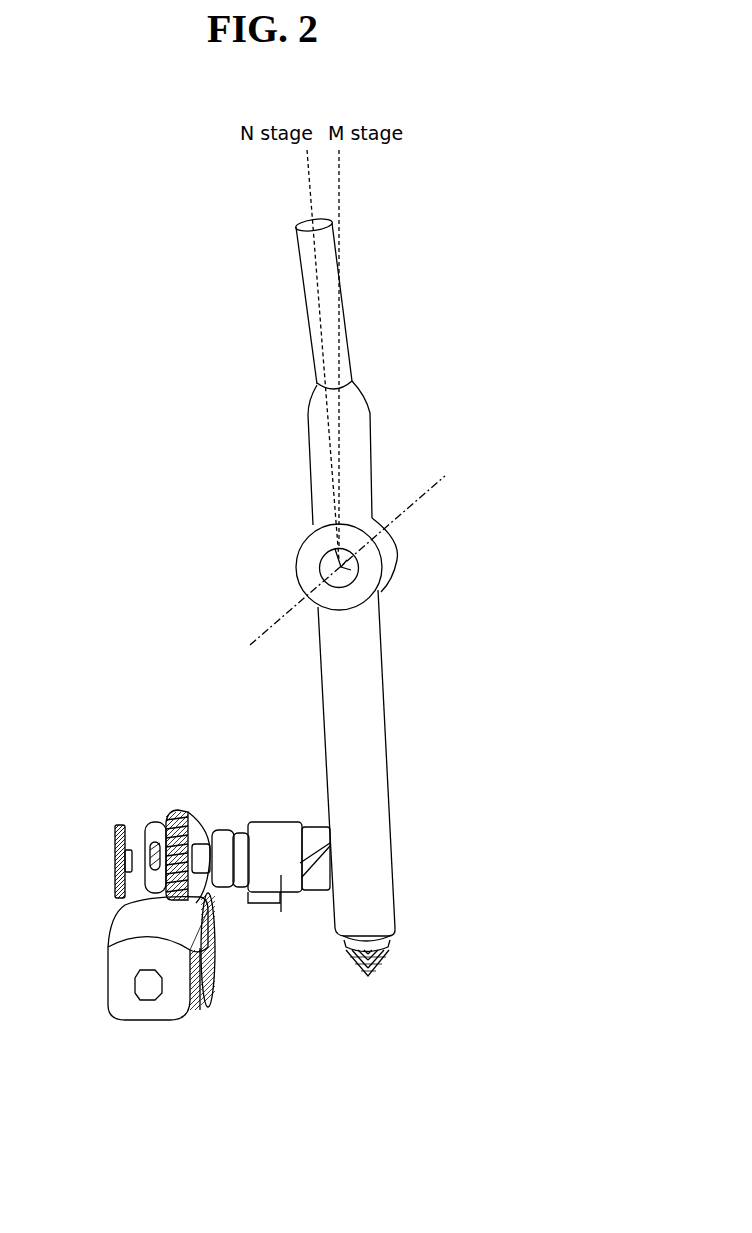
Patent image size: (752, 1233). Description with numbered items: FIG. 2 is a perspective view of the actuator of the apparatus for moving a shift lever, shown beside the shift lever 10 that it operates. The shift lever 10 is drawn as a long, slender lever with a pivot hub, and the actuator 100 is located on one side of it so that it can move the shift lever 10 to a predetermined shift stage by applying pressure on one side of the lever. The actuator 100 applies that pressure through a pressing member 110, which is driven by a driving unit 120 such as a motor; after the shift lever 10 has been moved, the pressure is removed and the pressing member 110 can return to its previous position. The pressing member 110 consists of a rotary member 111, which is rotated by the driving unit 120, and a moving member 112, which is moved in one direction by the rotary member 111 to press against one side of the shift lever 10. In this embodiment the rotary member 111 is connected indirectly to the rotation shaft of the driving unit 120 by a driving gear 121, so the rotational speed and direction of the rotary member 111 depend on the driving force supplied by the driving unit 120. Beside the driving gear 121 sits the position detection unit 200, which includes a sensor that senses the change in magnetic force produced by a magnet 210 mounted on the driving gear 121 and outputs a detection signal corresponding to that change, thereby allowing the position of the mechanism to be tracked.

The shift lever 10 is at (358, 643).
The actuator 100 is at (307, 1047).
The pressing member 110 is at (338, 1010).
The rotary member 111 is at (223, 897).
The moving member 112 is at (277, 890).
The driving unit 120 is at (170, 1012).
The driving gear 121 is at (200, 990).
The position detection unit 200 is at (129, 838).
The magnet 210 is at (170, 808).